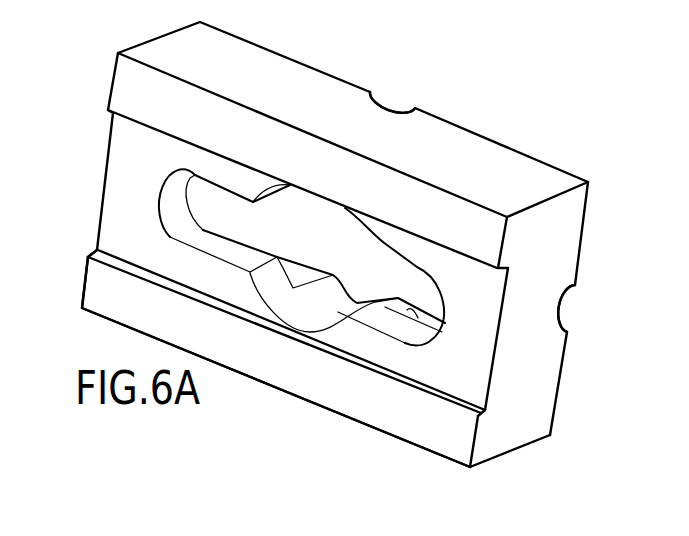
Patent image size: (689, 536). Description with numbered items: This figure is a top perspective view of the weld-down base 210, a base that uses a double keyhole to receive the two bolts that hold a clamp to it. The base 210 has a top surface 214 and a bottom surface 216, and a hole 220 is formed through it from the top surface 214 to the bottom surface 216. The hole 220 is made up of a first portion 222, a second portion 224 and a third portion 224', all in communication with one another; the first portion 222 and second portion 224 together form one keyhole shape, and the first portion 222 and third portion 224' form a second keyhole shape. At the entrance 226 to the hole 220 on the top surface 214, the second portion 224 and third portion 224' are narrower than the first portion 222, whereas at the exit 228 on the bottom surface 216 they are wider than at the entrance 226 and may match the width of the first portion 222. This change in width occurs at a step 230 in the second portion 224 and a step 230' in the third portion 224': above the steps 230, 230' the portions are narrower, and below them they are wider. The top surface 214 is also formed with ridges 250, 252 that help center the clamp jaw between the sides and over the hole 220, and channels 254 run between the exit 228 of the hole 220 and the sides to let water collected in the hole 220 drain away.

The base 210 is at (76, 190).
The top surface 214 is at (168, 105).
The bottom surface 216 is at (578, 246).
The hole 220 is at (306, 308).
The first portion 222 is at (312, 295).
The second portion 224 is at (184, 220).
The third portion 224' is at (420, 276).
The entrance 226 is at (366, 321).
The exit 228 is at (313, 259).
The step 230 is at (268, 252).
The step 230' is at (447, 338).
The ridge 250 is at (448, 440).
The ridge 252 is at (483, 232).
The channel 254 is at (396, 103).